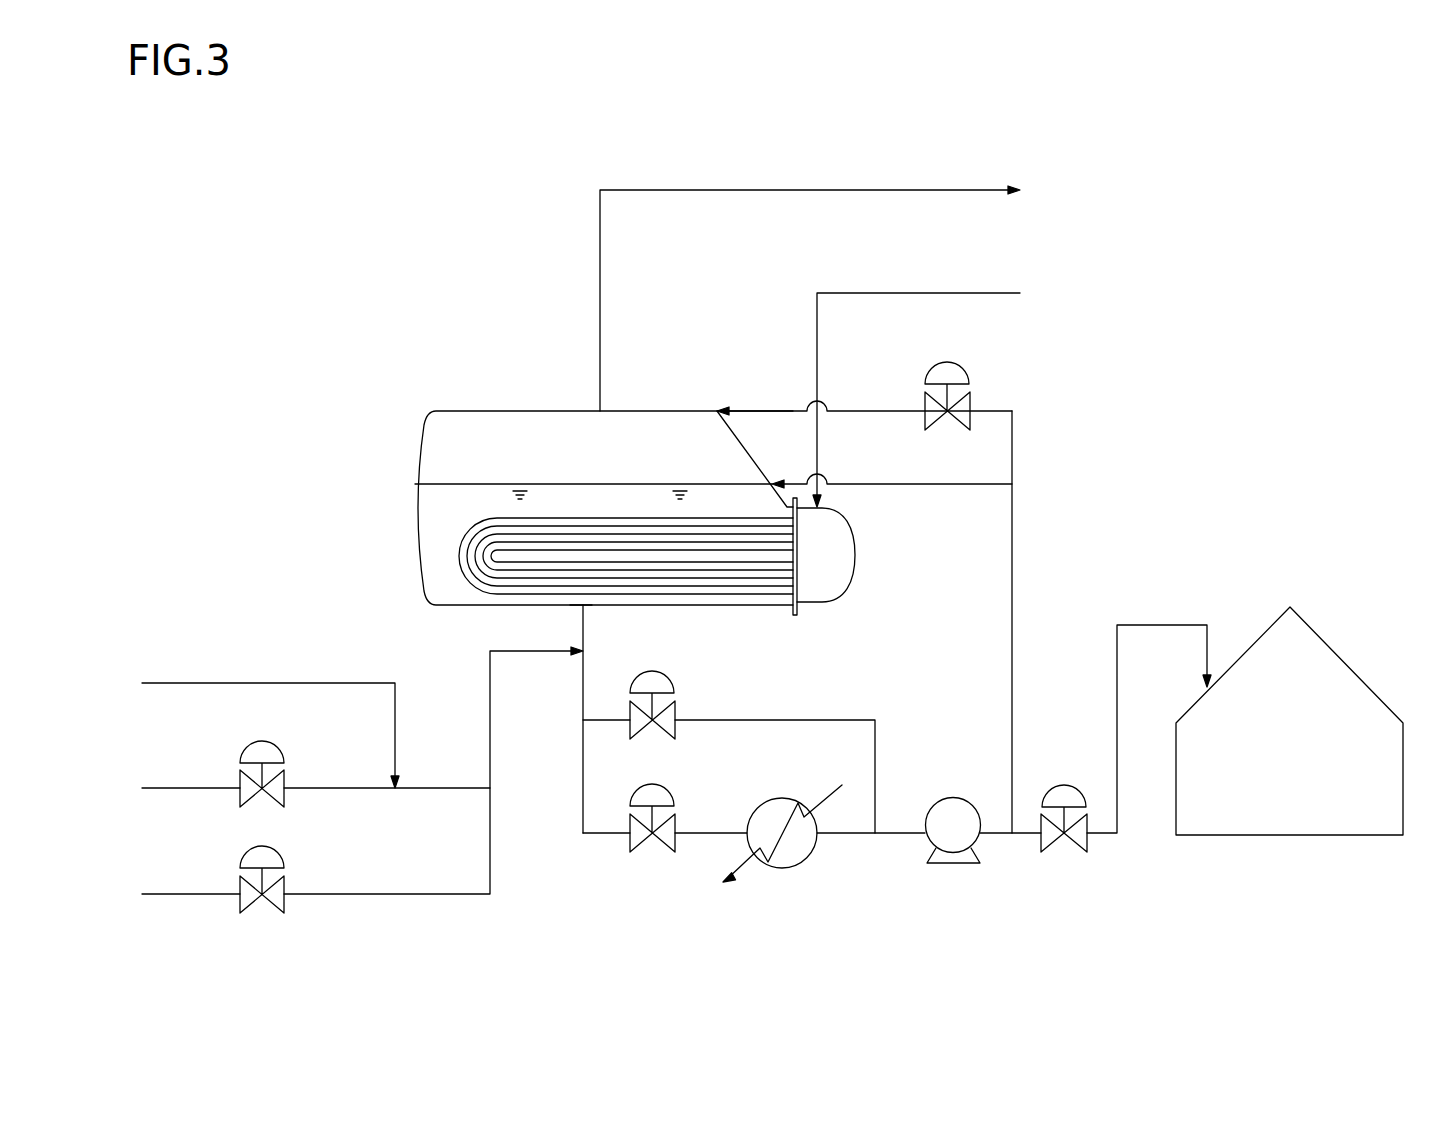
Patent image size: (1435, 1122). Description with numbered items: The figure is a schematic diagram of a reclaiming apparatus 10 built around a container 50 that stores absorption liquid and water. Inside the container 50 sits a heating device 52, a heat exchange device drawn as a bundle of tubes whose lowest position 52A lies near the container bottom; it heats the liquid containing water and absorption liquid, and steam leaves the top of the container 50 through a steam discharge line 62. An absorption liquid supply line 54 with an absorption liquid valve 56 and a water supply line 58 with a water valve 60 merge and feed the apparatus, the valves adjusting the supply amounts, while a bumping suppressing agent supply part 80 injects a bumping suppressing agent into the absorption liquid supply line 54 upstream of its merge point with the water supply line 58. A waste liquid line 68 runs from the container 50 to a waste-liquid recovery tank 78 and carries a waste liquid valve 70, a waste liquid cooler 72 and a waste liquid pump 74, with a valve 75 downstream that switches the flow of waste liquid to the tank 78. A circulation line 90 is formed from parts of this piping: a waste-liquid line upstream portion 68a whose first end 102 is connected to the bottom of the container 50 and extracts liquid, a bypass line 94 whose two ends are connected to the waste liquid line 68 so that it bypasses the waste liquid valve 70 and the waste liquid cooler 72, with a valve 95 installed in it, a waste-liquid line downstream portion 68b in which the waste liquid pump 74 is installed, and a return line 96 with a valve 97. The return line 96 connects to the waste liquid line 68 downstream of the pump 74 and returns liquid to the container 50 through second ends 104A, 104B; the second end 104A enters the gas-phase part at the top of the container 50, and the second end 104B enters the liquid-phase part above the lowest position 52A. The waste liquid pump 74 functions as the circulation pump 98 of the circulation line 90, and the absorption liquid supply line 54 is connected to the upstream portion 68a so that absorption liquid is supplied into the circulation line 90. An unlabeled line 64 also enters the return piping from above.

The reclaiming apparatus 10 is at (1368, 144).
The container 50 is at (660, 411).
The heating device 52 is at (737, 598).
The lowest position of the heating device 52A is at (790, 603).
The absorption liquid supply line 54 is at (178, 788).
The absorption liquid valve 56 is at (282, 750).
The water supply line 58 is at (178, 896).
The water valve 60 is at (282, 858).
The steam discharge line 62 is at (736, 190).
The inlet line 64 is at (934, 293).
The waste liquid line 68 is at (583, 772).
The waste-liquid line upstream portion 68a is at (584, 628).
The waste-liquid line downstream portion 68b is at (898, 834).
The waste liquid valve 70 is at (672, 790).
The waste liquid cooler 72 is at (782, 868).
The waste liquid pump 74 is at (953, 797).
The valve 75 is at (1063, 785).
The waste-liquid recovery tank 78 is at (1366, 688).
The bumping suppressing agent supply part 80 is at (178, 683).
The circulation line 90 is at (897, 664).
The bypass line 94 is at (845, 720).
The valve 95 is at (674, 690).
The return line 96 is at (1013, 528).
The valve 97 is at (968, 383).
The circulation pump 98 is at (952, 797).
The first end 102 is at (582, 606).
The second end 104A is at (722, 411).
The second end 104B is at (766, 484).